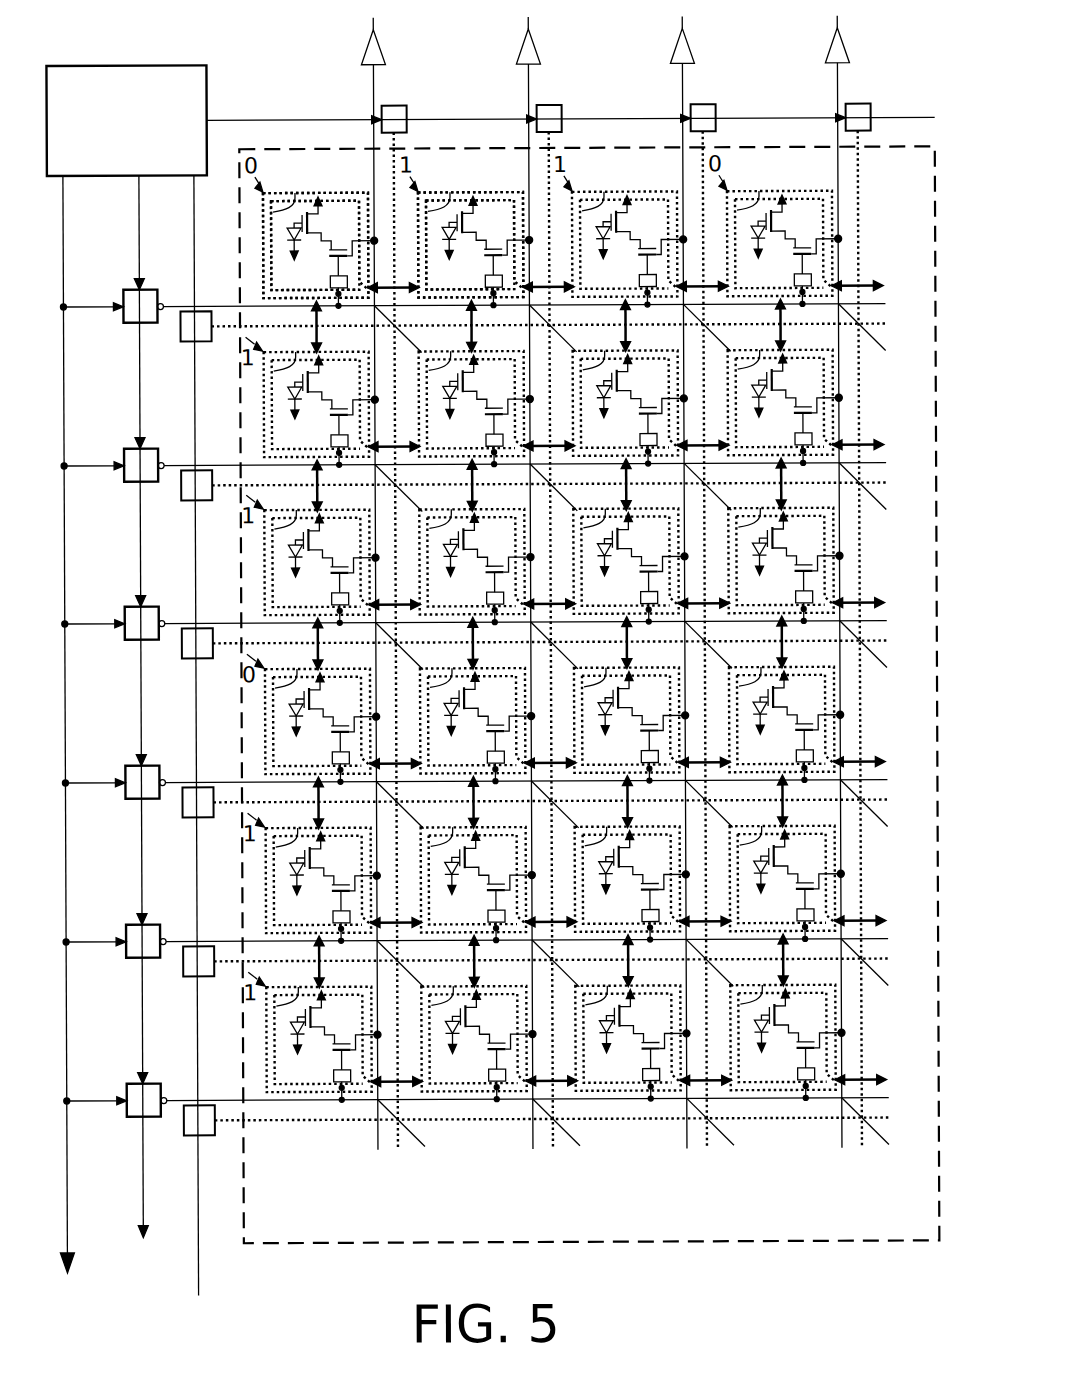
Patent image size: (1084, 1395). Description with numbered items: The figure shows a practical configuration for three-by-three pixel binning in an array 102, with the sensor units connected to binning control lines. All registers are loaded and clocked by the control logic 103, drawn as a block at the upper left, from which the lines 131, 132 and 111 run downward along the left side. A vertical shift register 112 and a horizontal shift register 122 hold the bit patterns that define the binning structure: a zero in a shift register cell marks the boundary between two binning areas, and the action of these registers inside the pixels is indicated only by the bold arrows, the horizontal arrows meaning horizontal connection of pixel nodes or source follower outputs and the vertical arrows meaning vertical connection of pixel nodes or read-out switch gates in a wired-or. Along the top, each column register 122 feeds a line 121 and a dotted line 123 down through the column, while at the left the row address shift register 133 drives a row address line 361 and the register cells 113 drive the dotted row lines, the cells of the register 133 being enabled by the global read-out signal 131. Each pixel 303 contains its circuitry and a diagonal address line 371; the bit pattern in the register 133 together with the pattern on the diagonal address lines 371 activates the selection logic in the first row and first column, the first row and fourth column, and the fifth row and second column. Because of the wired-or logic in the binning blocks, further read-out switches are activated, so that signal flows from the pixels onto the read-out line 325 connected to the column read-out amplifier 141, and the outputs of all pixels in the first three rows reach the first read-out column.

The array 102 is at (303, 1236).
The control logic 103 is at (127, 65).
The row select line 111 is at (194, 226).
The vertical shift register 112 is at (180, 338).
The row register 113 is at (221, 330).
The column control line 121 is at (347, 119).
The horizontal shift register 122 is at (406, 108).
The column select line 123 is at (397, 243).
The global read-out signal 131 is at (63, 346).
The shift line 132 is at (139, 196).
The row address shift register 133 is at (123, 290).
The column read-out amplifier 141 is at (387, 45).
The pixel 303 is at (327, 190).
The read-out line 325 is at (357, 194).
The row address line 361 is at (164, 300).
The diagonal address line 371 is at (295, 193).